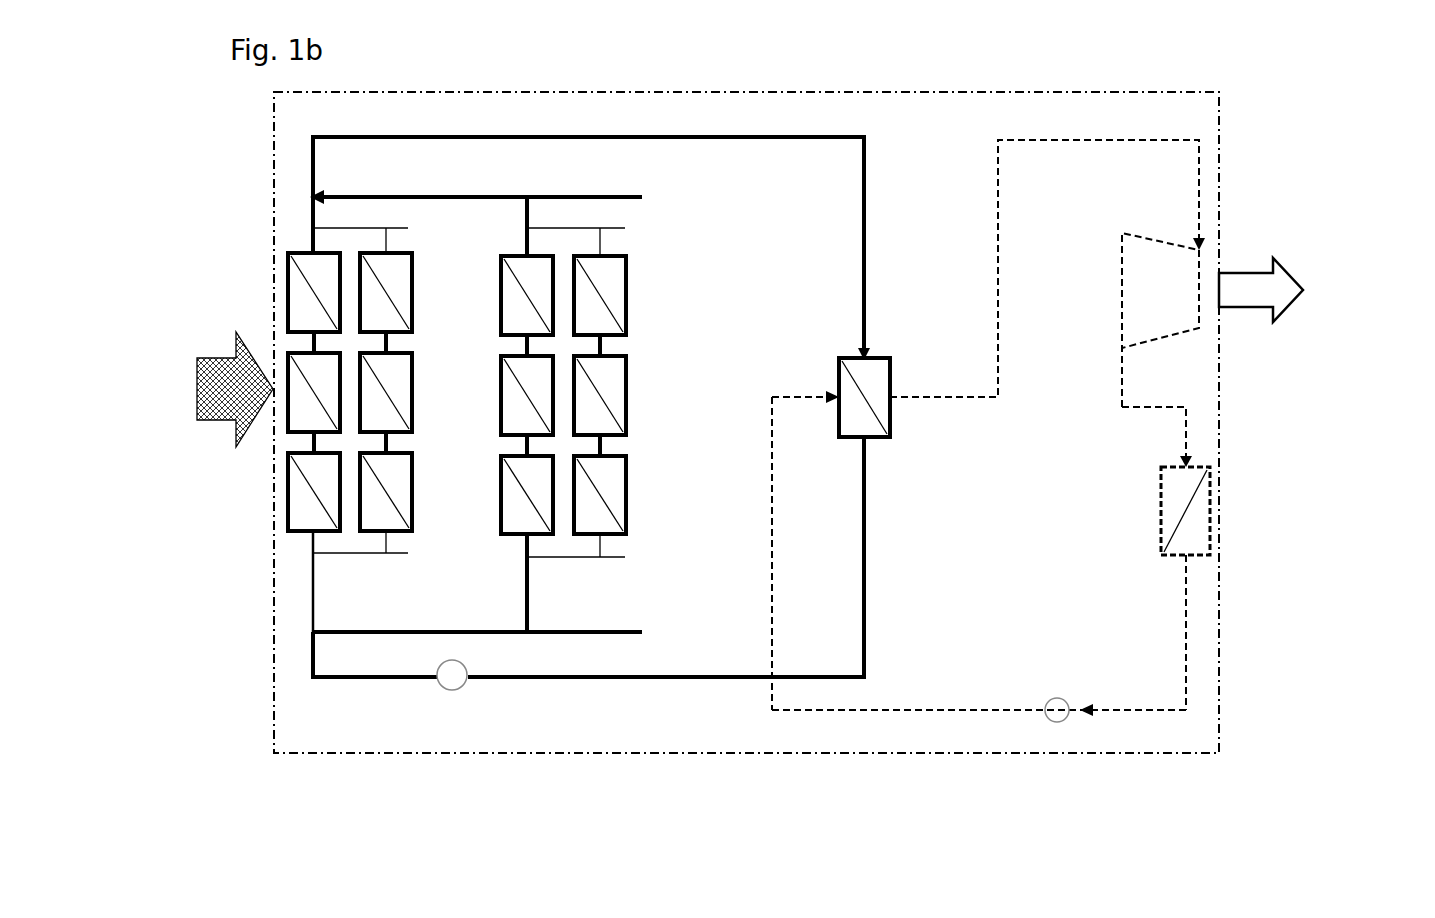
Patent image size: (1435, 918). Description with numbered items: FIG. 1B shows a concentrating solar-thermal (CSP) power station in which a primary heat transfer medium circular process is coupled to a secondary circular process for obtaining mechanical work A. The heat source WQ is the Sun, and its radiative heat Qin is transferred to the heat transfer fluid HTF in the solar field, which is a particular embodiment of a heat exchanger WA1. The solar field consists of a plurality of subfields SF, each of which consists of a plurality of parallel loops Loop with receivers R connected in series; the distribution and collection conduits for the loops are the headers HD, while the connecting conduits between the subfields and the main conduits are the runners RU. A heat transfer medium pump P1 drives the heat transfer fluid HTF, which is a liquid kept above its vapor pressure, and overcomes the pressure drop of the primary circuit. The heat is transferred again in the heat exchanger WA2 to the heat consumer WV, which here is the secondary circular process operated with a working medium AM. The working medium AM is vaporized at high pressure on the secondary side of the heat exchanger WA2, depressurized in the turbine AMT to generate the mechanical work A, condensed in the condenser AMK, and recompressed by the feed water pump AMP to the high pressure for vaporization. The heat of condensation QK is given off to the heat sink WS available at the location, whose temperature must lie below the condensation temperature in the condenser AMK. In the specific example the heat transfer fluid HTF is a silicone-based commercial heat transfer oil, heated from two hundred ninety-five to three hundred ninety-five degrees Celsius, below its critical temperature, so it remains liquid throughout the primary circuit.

The heat source WQ is at (195, 389).
The quantity of heat Qin is at (179, 310).
The subfield SF is at (591, 384).
The receiver R is at (457, 393).
The loop Loop is at (441, 398).
The header HD is at (469, 391).
The runner RU is at (498, 415).
The heat exchanger WA1 is at (384, 171).
The heat transfer fluid HTF is at (588, 574).
The heat transfer medium pump P1 is at (452, 694).
The heat consumer WV is at (896, 402).
The heat exchanger WA2 is at (788, 347).
The working medium AM is at (988, 428).
The feed water pump AMP is at (1059, 692).
The turbine AMT is at (1130, 350).
The condenser AMK is at (1153, 588).
The mechanical work A is at (1275, 290).
The heat of condensation QK is at (1323, 514).
The heat sink WS is at (1381, 512).